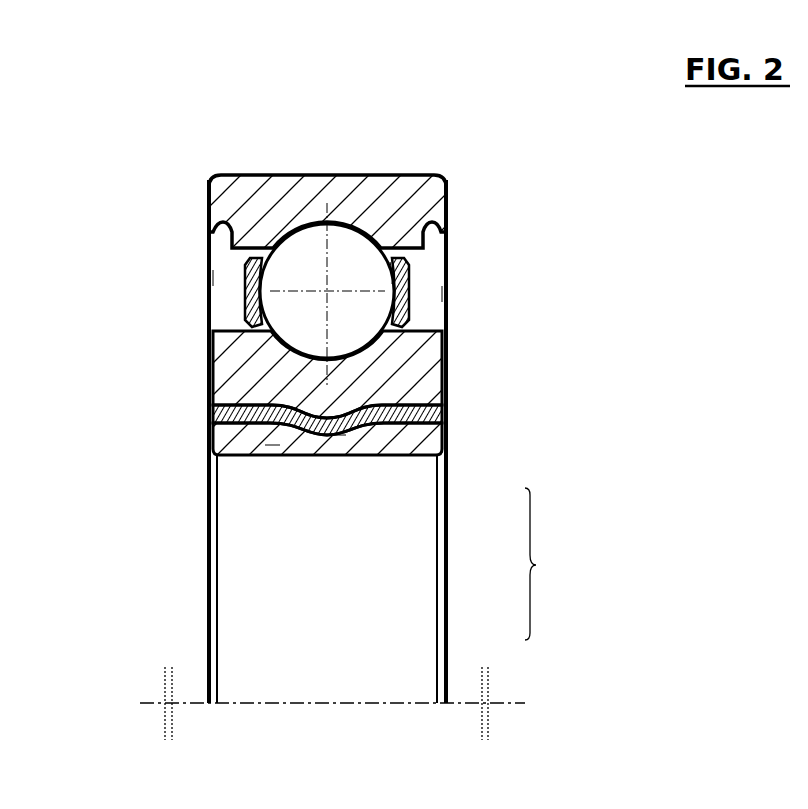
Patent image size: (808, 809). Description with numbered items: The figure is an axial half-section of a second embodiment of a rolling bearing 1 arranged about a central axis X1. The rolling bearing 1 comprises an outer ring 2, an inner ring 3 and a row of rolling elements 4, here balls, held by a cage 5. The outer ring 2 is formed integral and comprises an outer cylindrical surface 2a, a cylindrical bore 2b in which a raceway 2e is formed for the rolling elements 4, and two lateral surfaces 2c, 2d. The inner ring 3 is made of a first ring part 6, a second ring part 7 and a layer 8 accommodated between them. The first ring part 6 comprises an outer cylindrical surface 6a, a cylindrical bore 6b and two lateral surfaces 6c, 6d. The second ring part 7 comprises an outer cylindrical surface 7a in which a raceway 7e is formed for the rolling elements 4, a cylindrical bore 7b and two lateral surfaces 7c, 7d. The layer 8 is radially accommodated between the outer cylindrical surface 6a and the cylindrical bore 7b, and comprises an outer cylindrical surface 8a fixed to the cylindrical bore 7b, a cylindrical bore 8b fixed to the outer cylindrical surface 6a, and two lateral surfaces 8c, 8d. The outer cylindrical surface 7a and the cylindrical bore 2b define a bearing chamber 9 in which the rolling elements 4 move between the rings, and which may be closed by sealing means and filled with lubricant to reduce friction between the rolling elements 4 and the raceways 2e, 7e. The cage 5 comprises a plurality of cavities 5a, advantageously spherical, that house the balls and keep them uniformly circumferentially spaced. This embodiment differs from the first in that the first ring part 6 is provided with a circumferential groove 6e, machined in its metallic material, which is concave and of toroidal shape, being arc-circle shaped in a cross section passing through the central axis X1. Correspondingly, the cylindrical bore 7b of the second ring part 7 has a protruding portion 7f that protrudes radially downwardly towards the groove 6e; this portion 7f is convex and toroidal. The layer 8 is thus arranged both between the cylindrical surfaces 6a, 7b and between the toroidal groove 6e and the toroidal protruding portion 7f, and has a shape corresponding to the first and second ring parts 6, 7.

The rolling bearing 1 is at (227, 95).
The outer ring 2 is at (440, 162).
The outer cylindrical surface 2a is at (213, 278).
The cylindrical bore 2b is at (255, 175).
The lateral surface 2c is at (209, 212).
The lateral surface 2d is at (450, 211).
The raceway 2e is at (326, 252).
The inner ring 3 is at (542, 564).
The rolling elements 4 is at (305, 279).
The cage 5 is at (410, 272).
The cavities 5a is at (392, 273).
The first ring part 6 is at (429, 469).
The outer cylindrical surface 6a is at (450, 377).
The cylindrical bore 6b is at (243, 456).
The lateral surface 6c is at (209, 440).
The lateral surface 6d is at (450, 447).
The circumferential groove 6e is at (324, 456).
The second ring part 7 is at (353, 392).
The outer cylindrical surface 7a is at (418, 330).
The cylindrical bore 7b is at (284, 450).
The lateral surface 7c is at (209, 363).
The lateral surface 7d is at (450, 363).
The raceway 7e is at (413, 291).
The protruding portion 7f is at (338, 442).
The layer 8 is at (374, 428).
The outer cylindrical surface 8a is at (213, 380).
The cylindrical bore 8b is at (272, 448).
The lateral surface 8c is at (213, 413).
The lateral surface 8d is at (450, 417).
The bearing chamber 9 is at (209, 300).
The central axis X1 is at (332, 703).